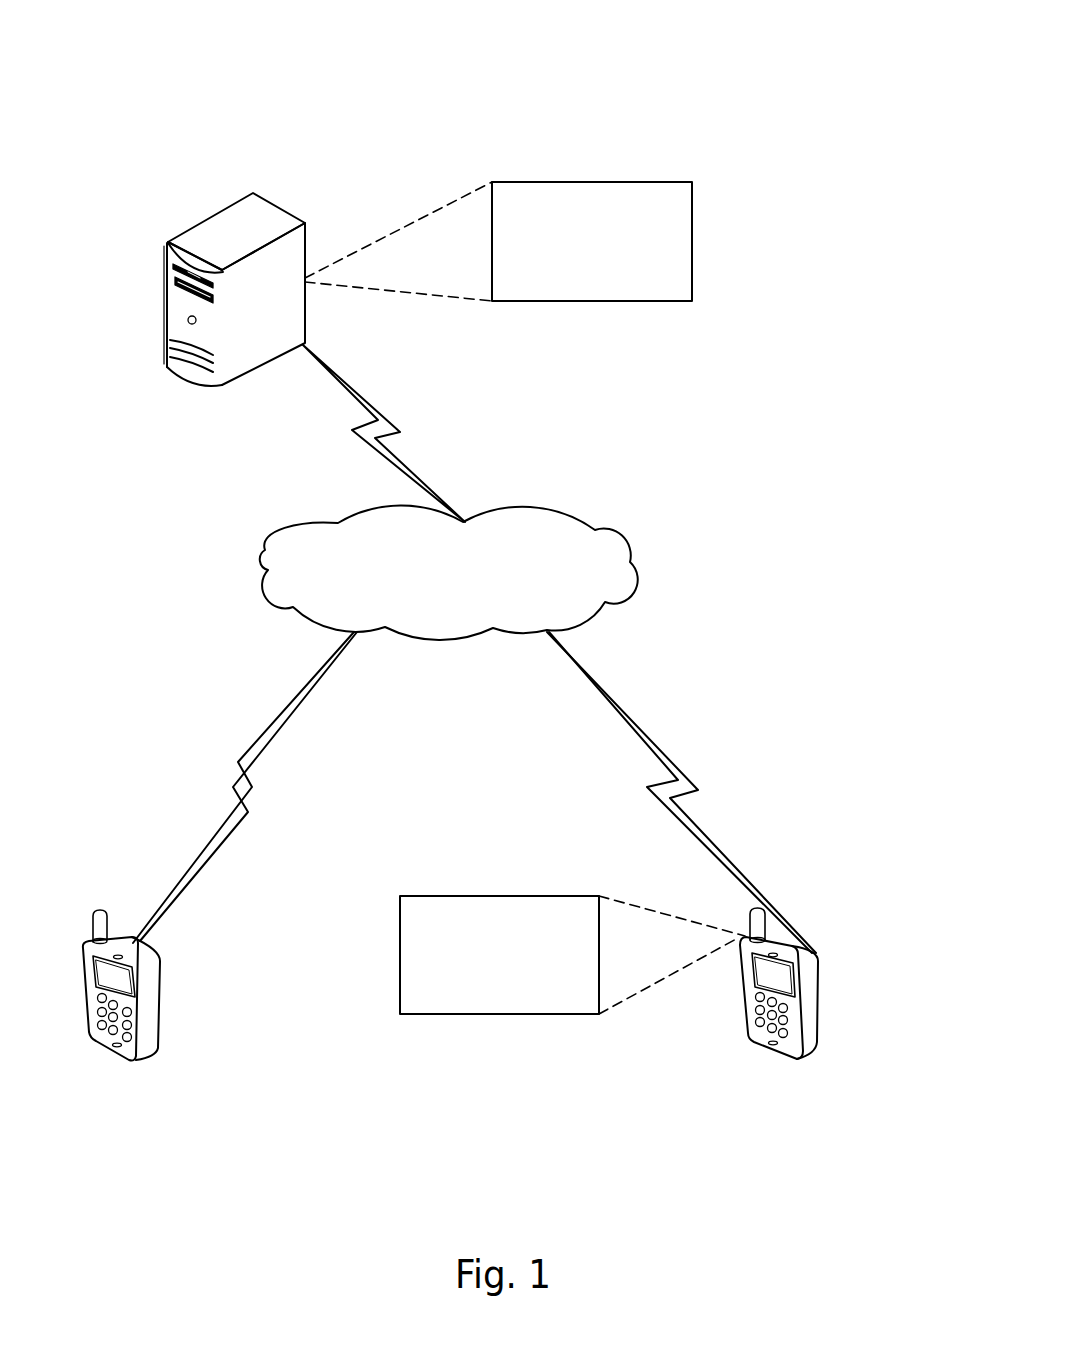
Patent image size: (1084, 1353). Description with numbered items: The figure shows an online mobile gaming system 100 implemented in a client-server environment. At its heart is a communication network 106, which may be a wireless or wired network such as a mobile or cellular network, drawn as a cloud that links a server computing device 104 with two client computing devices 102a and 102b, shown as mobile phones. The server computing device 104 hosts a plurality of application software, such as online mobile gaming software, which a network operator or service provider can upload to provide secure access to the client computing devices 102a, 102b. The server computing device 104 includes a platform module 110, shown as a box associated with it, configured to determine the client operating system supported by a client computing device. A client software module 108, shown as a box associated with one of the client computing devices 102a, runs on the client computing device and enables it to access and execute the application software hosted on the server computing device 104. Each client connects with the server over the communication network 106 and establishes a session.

The online mobile gaming system 100 is at (680, 58).
The client computing device 102a is at (822, 985).
The client computing device 102b is at (163, 1012).
The server computing device 104 is at (282, 208).
The communication network 106 is at (525, 510).
The client software module 108 is at (485, 896).
The platform module 110 is at (628, 182).